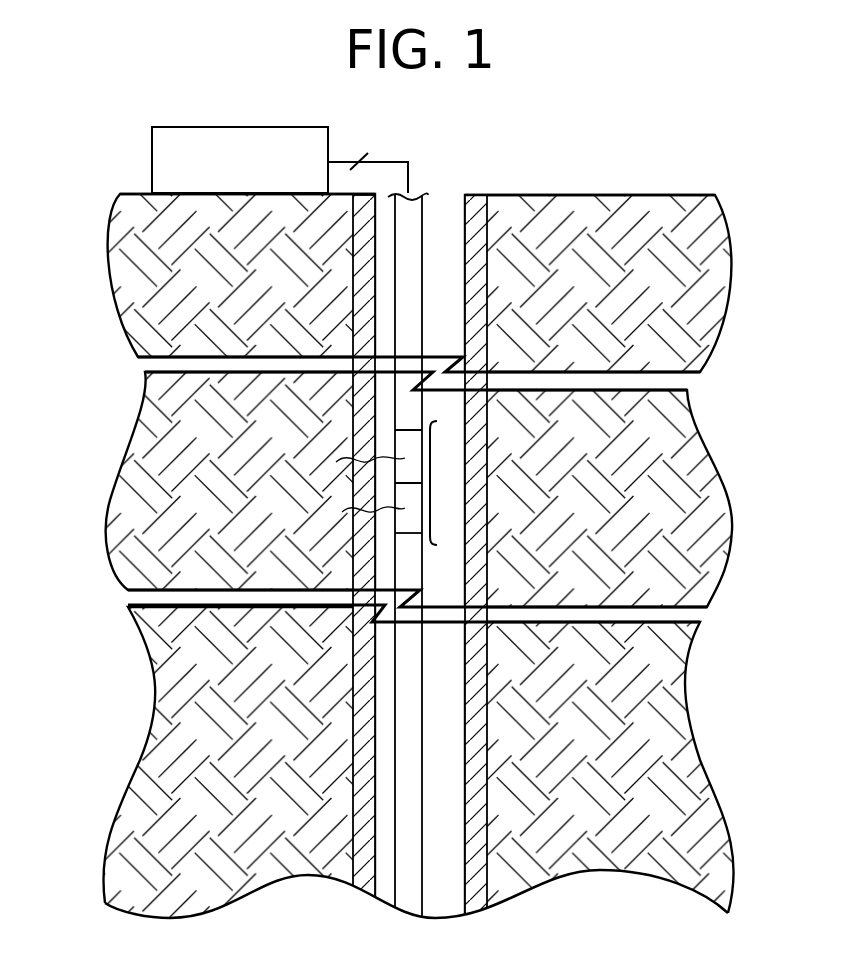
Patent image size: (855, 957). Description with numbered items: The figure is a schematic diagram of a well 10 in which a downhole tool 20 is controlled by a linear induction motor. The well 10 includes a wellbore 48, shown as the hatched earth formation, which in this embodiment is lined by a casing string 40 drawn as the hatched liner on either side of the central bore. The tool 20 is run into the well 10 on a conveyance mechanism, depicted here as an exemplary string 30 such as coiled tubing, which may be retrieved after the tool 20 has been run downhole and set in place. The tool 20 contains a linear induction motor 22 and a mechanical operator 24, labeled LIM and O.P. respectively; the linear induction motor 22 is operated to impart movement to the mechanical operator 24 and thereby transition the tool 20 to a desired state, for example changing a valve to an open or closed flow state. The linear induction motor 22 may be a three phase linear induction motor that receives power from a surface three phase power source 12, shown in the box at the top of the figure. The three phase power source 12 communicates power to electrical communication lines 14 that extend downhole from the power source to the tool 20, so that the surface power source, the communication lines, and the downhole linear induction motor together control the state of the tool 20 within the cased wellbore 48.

The well 10 is at (632, 171).
The three phase power source 12 is at (152, 162).
The electrical communication lines 14 is at (410, 162).
The tool 20 is at (433, 483).
The linear induction motor 22 is at (433, 447).
The mechanical operator 24 is at (433, 520).
The string 30 is at (422, 312).
The casing string 40 is at (487, 240).
The wellbore 48 is at (513, 218).